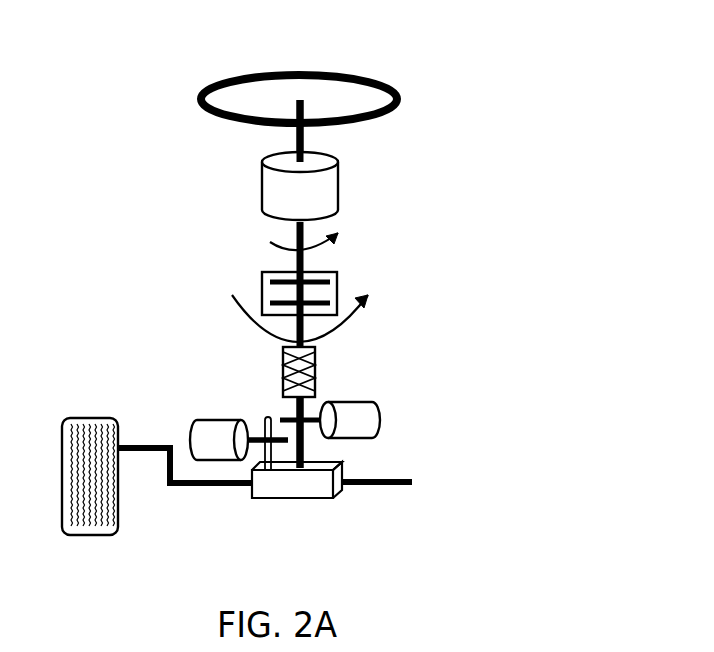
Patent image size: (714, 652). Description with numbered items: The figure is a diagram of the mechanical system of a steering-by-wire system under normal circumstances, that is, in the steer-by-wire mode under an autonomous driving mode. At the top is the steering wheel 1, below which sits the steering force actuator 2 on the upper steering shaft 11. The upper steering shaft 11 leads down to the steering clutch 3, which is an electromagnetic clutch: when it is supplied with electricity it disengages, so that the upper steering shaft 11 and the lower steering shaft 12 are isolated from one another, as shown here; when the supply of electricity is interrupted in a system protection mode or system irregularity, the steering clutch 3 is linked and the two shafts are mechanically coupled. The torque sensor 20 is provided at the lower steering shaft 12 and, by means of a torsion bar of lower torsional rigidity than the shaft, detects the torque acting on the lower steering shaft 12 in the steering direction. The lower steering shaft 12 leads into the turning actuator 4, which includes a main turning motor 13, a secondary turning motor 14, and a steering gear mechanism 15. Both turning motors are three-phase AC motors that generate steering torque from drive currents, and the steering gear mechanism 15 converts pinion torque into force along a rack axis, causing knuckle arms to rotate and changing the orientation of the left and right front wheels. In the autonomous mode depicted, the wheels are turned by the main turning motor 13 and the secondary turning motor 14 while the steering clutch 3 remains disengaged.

The steering wheel 1 is at (338, 73).
The steering force actuator 2 is at (262, 185).
The upper steering shaft 11 is at (290, 237).
The steering clutch 3 is at (337, 292).
The torque sensor 20 is at (317, 360).
The lower steering shaft 12 is at (285, 405).
The main turning motor 13 is at (358, 415).
The secondary turning motor 14 is at (213, 440).
The steering gear mechanism 15 is at (272, 492).
The turning actuator 4 is at (305, 499).